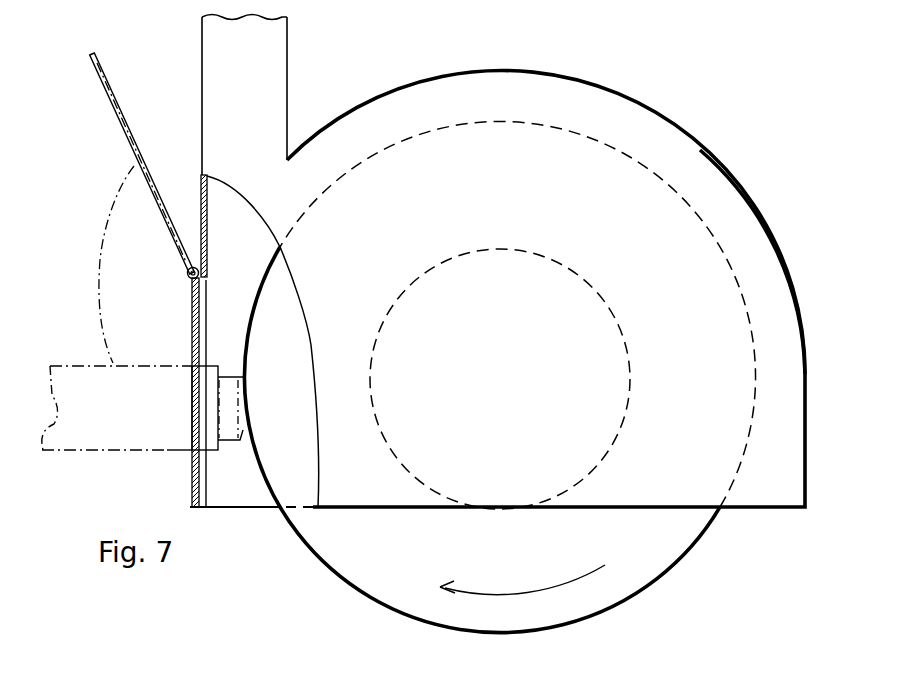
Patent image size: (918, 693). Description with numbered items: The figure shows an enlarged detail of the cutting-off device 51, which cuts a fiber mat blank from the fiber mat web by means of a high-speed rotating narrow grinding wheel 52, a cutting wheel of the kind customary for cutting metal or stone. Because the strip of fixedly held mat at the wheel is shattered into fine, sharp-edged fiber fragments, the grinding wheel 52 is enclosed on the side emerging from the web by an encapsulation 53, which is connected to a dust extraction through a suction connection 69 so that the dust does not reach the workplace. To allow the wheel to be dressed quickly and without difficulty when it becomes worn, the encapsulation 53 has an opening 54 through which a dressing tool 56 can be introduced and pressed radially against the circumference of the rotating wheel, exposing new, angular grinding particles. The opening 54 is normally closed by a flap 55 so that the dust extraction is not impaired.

The cutting-off device 51 is at (598, 83).
The grinding wheel 52 is at (685, 558).
The encapsulation 53 is at (748, 200).
The opening 54 is at (203, 343).
The flap 55 is at (190, 330).
The dressing tool 56 is at (143, 367).
The suction connection 69 is at (265, 75).